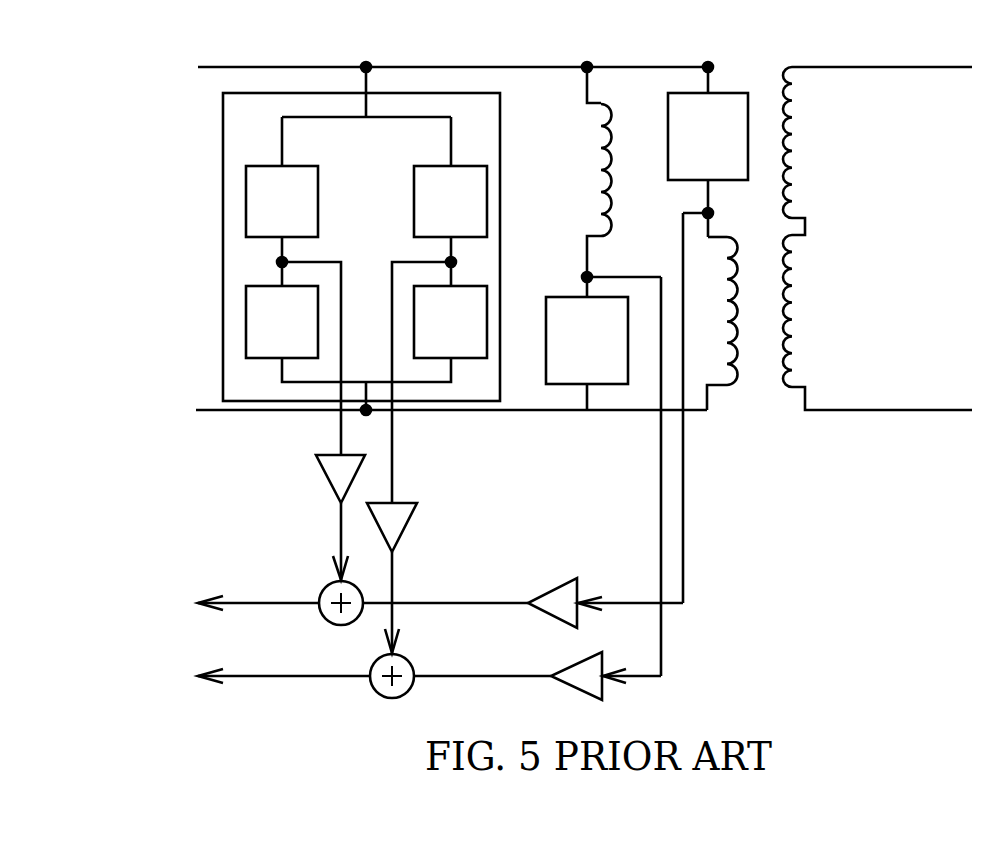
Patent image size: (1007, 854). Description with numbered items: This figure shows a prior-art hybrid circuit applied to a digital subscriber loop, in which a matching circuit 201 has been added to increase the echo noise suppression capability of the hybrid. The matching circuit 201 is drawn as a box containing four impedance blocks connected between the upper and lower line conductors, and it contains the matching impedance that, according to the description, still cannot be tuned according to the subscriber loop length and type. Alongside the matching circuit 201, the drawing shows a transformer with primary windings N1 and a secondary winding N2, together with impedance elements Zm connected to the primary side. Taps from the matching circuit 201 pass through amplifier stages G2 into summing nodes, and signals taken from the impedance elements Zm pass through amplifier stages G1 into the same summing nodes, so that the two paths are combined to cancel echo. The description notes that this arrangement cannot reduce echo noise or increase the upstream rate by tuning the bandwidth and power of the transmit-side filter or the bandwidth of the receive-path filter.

The matching circuit 201 is at (223, 217).
The primary winding N1 is at (650, 238).
The secondary winding N2 is at (877, 238).
The measurement impedance Zm is at (647, 238).
The first gain amplifier G1 is at (562, 632).
The second gain amplifier G2 is at (366, 503).